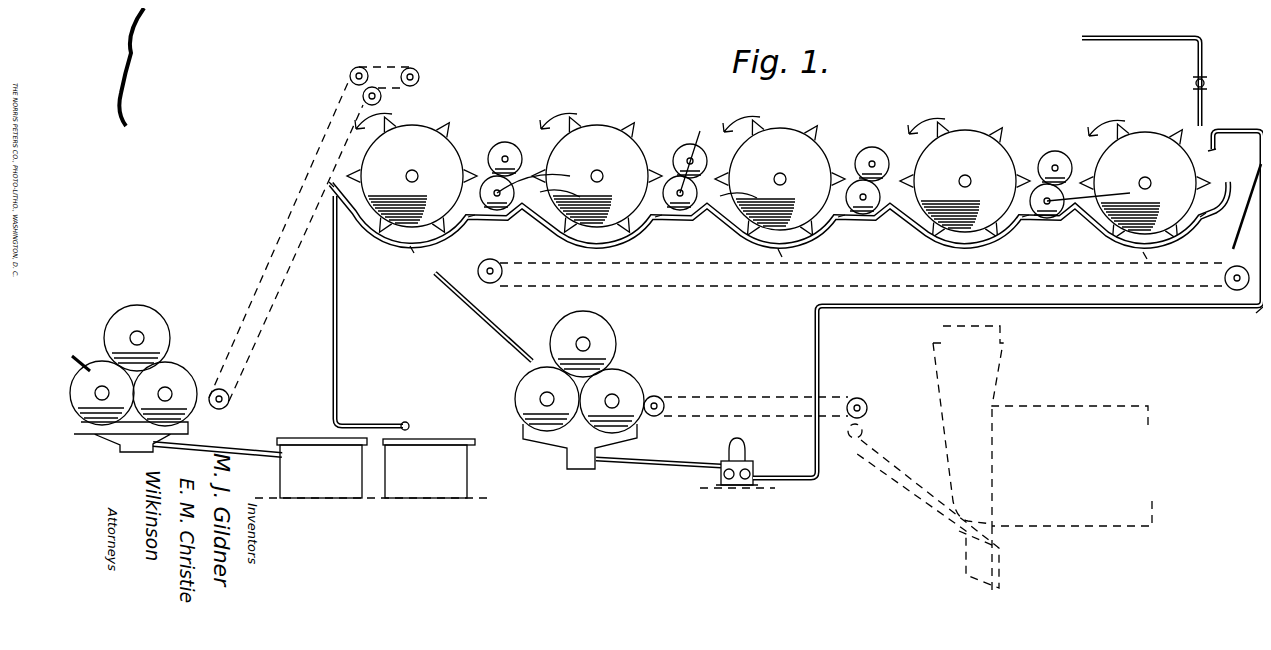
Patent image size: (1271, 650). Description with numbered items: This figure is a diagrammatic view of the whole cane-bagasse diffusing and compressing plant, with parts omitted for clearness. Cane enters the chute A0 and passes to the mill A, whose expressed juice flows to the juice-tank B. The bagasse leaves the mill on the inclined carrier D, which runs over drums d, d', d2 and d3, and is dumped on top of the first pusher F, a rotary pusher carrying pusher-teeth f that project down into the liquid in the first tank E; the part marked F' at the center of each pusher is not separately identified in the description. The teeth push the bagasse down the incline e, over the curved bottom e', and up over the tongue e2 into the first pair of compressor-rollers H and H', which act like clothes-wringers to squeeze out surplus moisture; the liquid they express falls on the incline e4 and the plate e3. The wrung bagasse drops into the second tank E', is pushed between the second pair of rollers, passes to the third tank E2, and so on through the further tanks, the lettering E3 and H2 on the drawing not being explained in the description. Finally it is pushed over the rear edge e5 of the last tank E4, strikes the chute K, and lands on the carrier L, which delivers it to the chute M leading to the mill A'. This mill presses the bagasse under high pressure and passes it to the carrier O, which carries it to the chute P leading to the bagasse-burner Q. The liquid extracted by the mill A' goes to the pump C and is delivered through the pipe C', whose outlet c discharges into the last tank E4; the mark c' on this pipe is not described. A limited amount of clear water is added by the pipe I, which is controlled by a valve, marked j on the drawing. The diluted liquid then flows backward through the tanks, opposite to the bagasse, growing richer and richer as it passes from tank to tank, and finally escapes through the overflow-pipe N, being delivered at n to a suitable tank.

The pusher F is at (778, 163).
The drum shaft F' is at (768, 166).
The tank E is at (778, 228).
The second tank E' is at (566, 236).
The third tank E2 is at (836, 224).
The trough section E3 is at (1020, 224).
The last tank E4 is at (1205, 226).
The incline e is at (520, 221).
The curved bottom e' is at (778, 264).
The tongue e2 is at (492, 166).
The plate e3 is at (495, 214).
The incline e4 is at (905, 232).
The rear edge e5 is at (1228, 184).
The compressor-roller H is at (781, 152).
The compressor-roller H' is at (774, 218).
The roller scraper H2 is at (734, 118).
The pusher-teeth f is at (466, 100).
The bagasse-carrier D is at (278, 222).
The drum d is at (217, 413).
The drum d' is at (535, 265).
The drum d2 is at (416, 70).
The drum d3 is at (363, 93).
The mill A is at (133, 365).
The chute A0 is at (90, 326).
The mill A' is at (582, 390).
The juice-tank B is at (372, 468).
The overflow-pipe N is at (340, 330).
The delivery point n is at (410, 425).
The chute M is at (508, 318).
The carrier L is at (863, 288).
The carrier O is at (728, 398).
The pump C is at (737, 475).
The pipe C' is at (1007, 304).
The outlet c is at (1220, 140).
The pipe elbow c' is at (1231, 320).
The pipe I is at (1148, 34).
The valve j is at (1192, 82).
The chute K is at (1244, 212).
The chute P is at (880, 436).
The bagasse-burner Q is at (1042, 461).